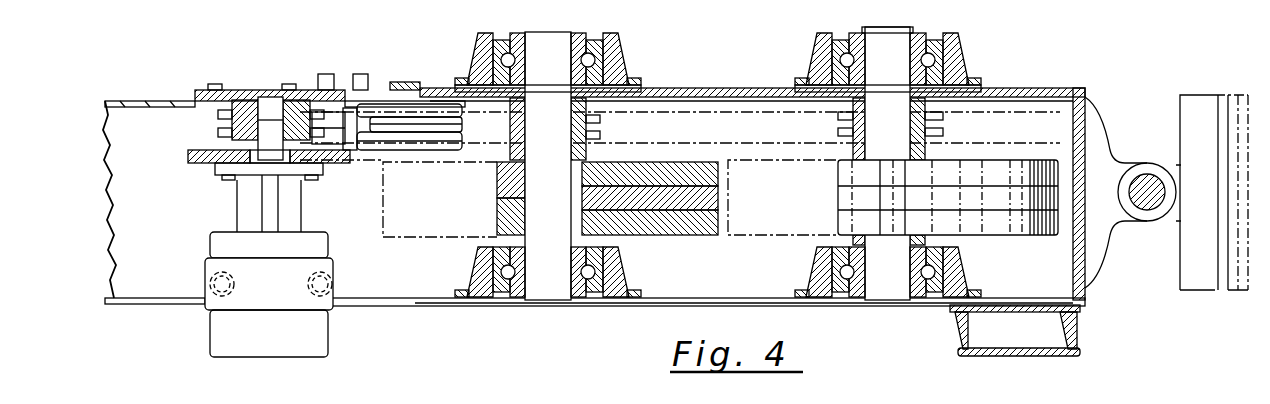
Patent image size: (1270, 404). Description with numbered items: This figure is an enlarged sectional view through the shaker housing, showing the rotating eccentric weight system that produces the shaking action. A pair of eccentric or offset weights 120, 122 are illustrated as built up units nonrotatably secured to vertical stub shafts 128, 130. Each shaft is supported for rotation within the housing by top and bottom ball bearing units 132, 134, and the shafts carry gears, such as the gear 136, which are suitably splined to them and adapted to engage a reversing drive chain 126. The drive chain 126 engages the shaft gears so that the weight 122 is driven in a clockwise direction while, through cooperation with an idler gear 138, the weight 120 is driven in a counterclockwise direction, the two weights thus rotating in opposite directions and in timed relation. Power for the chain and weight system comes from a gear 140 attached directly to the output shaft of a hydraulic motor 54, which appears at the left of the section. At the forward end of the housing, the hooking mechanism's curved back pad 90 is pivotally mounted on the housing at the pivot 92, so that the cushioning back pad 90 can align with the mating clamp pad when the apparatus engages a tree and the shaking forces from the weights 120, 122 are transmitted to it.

The hydraulic motor 54 is at (278, 344).
The back pad 90 is at (1202, 292).
The pivot mounting 92 is at (1137, 163).
The eccentric weight 120 is at (660, 227).
The eccentric weight 122 is at (1000, 222).
The reversing drive chain 126 is at (760, 110).
The vertical stub shaft 128 is at (558, 188).
The vertical stub shaft 130 is at (897, 128).
The top ball bearing unit 132 is at (628, 55).
The bottom ball bearing unit 134 is at (477, 260).
The gear 136 is at (947, 130).
The idler gear 138 is at (393, 127).
The gear 140 is at (228, 133).